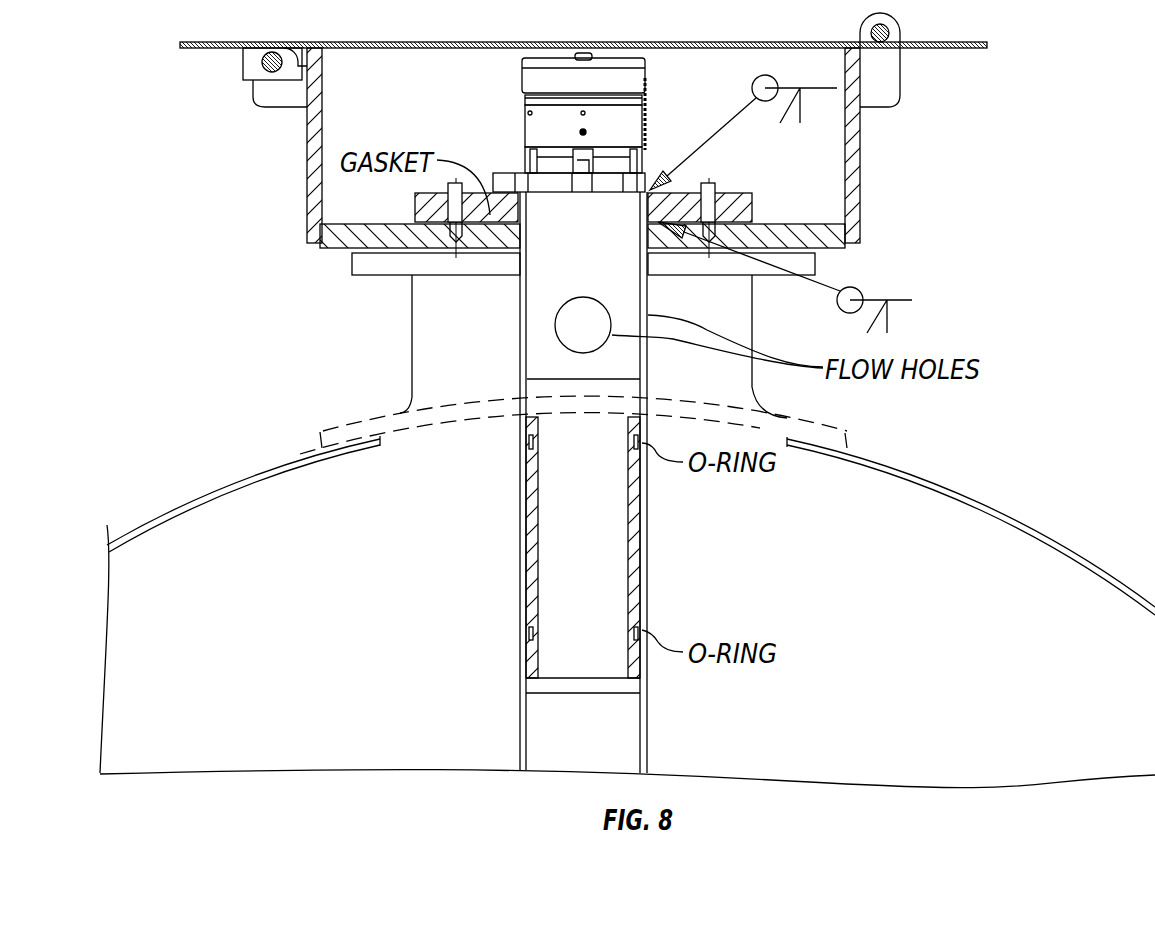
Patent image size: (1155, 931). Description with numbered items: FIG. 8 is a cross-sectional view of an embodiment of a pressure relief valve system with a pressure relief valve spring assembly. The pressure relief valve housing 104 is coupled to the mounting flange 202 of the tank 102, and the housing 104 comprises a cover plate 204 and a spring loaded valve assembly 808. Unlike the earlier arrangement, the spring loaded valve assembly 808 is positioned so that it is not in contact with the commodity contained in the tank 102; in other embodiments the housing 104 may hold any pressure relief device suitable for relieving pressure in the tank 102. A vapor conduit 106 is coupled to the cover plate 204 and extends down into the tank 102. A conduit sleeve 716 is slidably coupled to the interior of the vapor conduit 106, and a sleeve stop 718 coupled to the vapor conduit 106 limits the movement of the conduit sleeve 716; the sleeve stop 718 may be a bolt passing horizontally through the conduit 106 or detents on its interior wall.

The tank 102 is at (1080, 552).
The pressure relief valve housing 104 is at (860, 158).
The vapor conduit 106 is at (520, 425).
The mounting flange 202 is at (753, 312).
The cover plate 204 is at (328, 252).
The conduit sleeve 716 is at (647, 543).
The sleeve stop 718 is at (642, 685).
The spring loaded valve assembly 808 is at (647, 157).